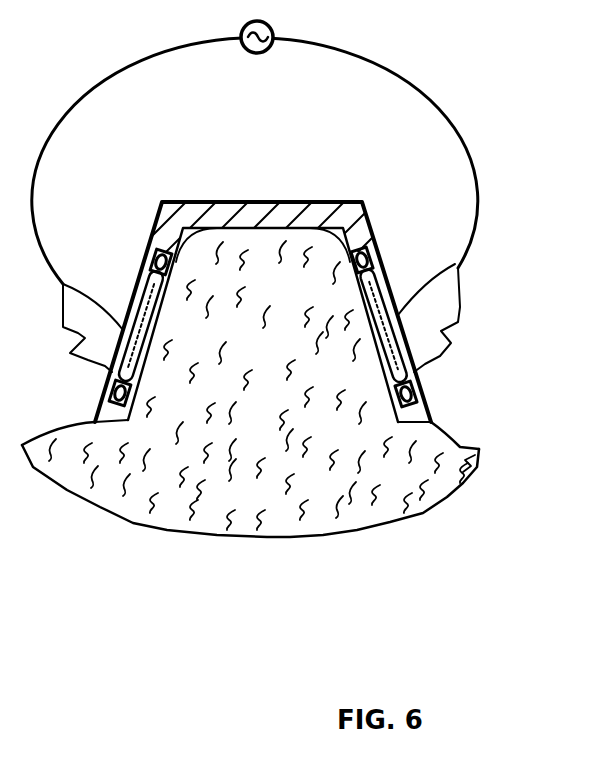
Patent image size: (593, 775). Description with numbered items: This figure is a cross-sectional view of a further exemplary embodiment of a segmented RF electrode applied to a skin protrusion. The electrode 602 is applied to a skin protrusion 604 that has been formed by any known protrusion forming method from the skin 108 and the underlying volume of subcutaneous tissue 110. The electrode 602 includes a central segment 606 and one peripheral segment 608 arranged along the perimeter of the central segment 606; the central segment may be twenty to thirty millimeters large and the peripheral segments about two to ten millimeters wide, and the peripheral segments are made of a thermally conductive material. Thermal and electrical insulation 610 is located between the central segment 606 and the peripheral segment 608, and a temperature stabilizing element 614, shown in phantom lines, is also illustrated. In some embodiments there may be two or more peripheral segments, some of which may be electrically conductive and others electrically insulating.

The skin 108 is at (460, 447).
The subcutaneous tissue 110 is at (72, 490).
The electrode 602 is at (392, 262).
The skin protrusion 604 is at (262, 248).
The central segment 606 is at (145, 275).
The peripheral segment 608 is at (157, 256).
The thermal and electrical insulation 610 is at (414, 377).
The temperature stabilizing element 614 is at (397, 324).